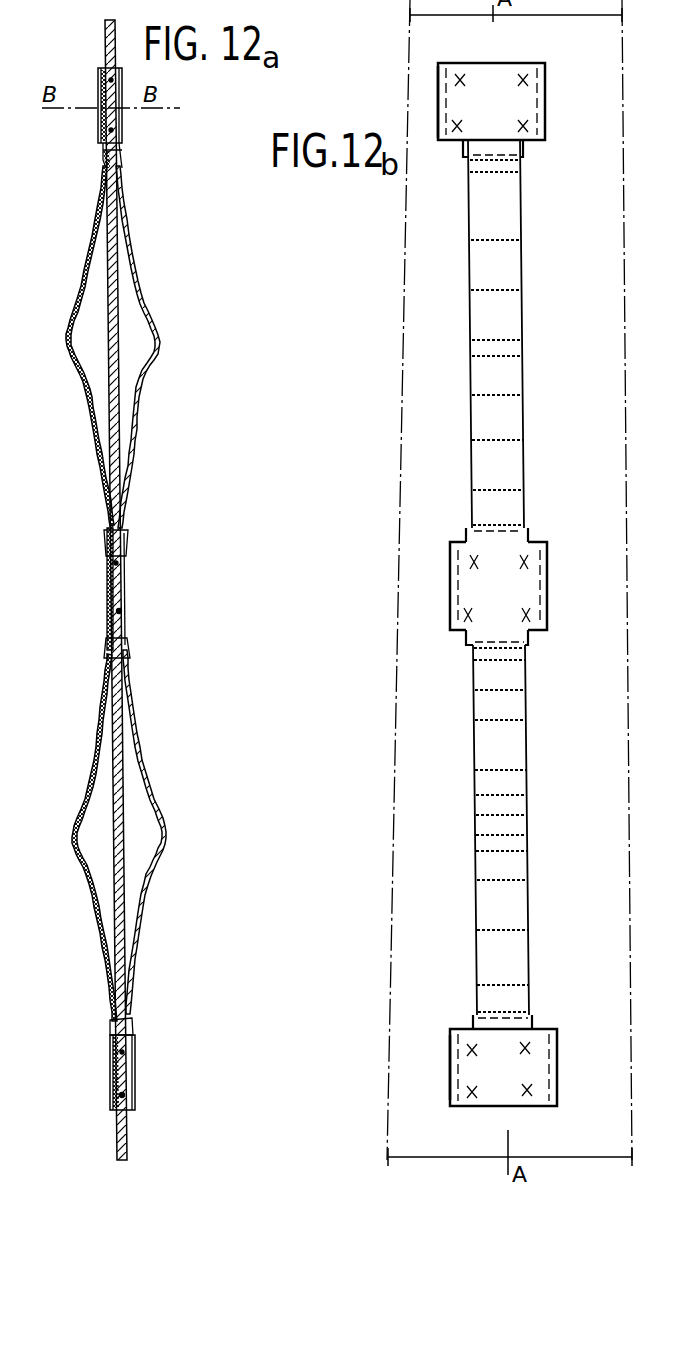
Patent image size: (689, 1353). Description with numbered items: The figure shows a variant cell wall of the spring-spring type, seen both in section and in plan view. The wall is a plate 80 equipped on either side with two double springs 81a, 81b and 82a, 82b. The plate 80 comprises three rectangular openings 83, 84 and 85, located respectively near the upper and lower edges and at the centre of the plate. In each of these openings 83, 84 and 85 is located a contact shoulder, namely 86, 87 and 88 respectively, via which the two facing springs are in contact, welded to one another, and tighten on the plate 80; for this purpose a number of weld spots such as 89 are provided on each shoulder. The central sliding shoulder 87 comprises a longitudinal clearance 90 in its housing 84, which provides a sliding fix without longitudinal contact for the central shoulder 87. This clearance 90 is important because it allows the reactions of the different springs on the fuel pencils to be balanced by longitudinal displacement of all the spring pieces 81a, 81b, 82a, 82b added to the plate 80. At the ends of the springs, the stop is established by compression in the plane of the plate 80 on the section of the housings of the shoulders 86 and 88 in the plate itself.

In FIG. 12a, the plate 80 is at (114, 380).
In FIG. 12b, the plate 80 is at (410, 945).
In FIG. 12a, the double spring 81a is at (88, 875).
In FIG. 12a, the double spring 81b is at (147, 801).
In FIG. 12a, the double spring 82a is at (82, 318).
In FIG. 12a, the double spring 82b is at (143, 313).
In FIG. 12a, the rectangular opening 83 is at (112, 1027).
In FIG. 12b, the rectangular opening 83 is at (450, 1065).
In FIG. 12a, the rectangular opening 84 is at (110, 642).
In FIG. 12b, the rectangular opening 84 is at (450, 582).
In FIG. 12a, the rectangular opening 85 is at (104, 152).
In FIG. 12b, the rectangular opening 85 is at (438, 87).
In FIG. 12a, the contact shoulder 86 is at (117, 1075).
In FIG. 12b, the contact shoulder 86 is at (487, 1070).
In FIG. 12a, the central sliding shoulder 87 is at (110, 577).
In FIG. 12b, the central sliding shoulder 87 is at (520, 587).
In FIG. 12a, the contact shoulder 88 is at (108, 97).
In FIG. 12b, the contact shoulder 88 is at (488, 82).
In FIG. 12a, the weld spot 89 is at (122, 608).
In FIG. 12b, the weld spot 89 is at (524, 80).
In FIG. 12b, the longitudinal clearance 90 is at (462, 543).